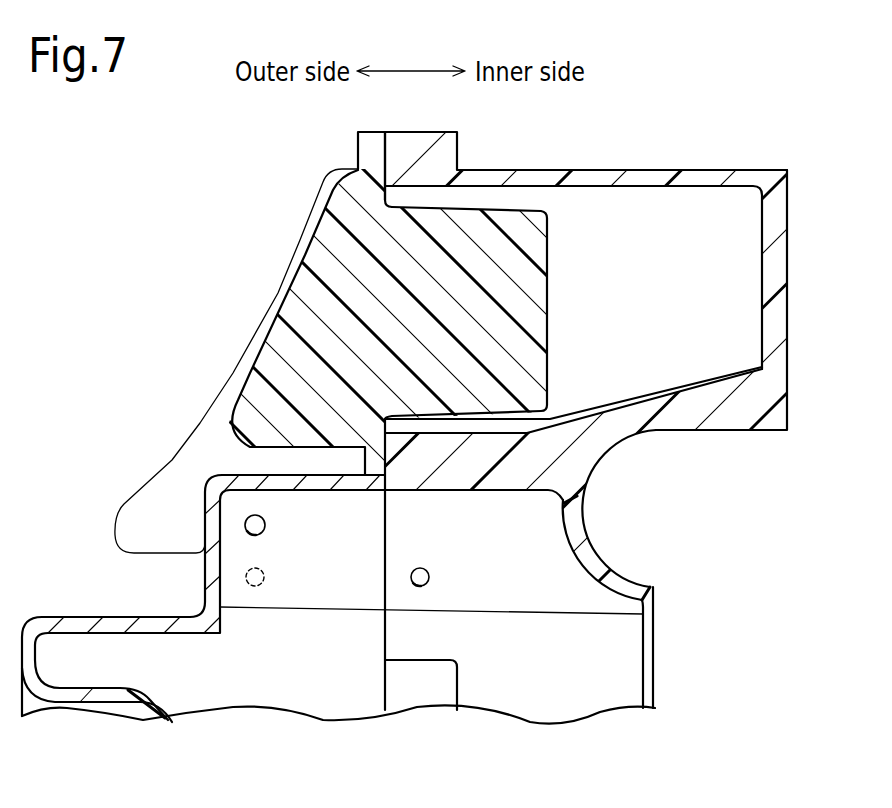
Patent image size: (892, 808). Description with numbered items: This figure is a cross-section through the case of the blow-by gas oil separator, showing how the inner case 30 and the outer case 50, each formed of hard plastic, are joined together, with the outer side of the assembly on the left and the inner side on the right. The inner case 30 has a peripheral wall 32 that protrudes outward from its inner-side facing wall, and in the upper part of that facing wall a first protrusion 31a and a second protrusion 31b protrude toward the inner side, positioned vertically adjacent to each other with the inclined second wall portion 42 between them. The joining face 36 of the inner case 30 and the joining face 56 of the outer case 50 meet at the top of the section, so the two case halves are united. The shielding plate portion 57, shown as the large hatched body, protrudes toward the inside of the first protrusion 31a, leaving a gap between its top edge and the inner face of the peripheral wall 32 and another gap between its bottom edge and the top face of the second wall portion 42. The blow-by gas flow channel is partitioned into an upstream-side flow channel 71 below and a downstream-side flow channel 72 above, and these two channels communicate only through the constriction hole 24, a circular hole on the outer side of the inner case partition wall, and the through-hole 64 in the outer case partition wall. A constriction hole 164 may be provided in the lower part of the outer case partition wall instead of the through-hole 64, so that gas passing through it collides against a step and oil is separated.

The constriction hole 24 is at (430, 578).
The inner case 30 is at (440, 740).
The first protrusion 31a is at (789, 300).
The second protrusion 31b is at (655, 662).
The peripheral wall 32 is at (606, 170).
The joining face 36 is at (384, 160).
The second wall portion 42 is at (442, 493).
The outer case 50 is at (320, 743).
The joining face 56 is at (388, 160).
The shielding plate portion 57 is at (548, 288).
The through-hole 64 is at (266, 528).
The upstream-side flow channel 71 is at (538, 694).
The downstream-side flow channel 72 is at (728, 218).
The constriction hole 164 is at (266, 574).